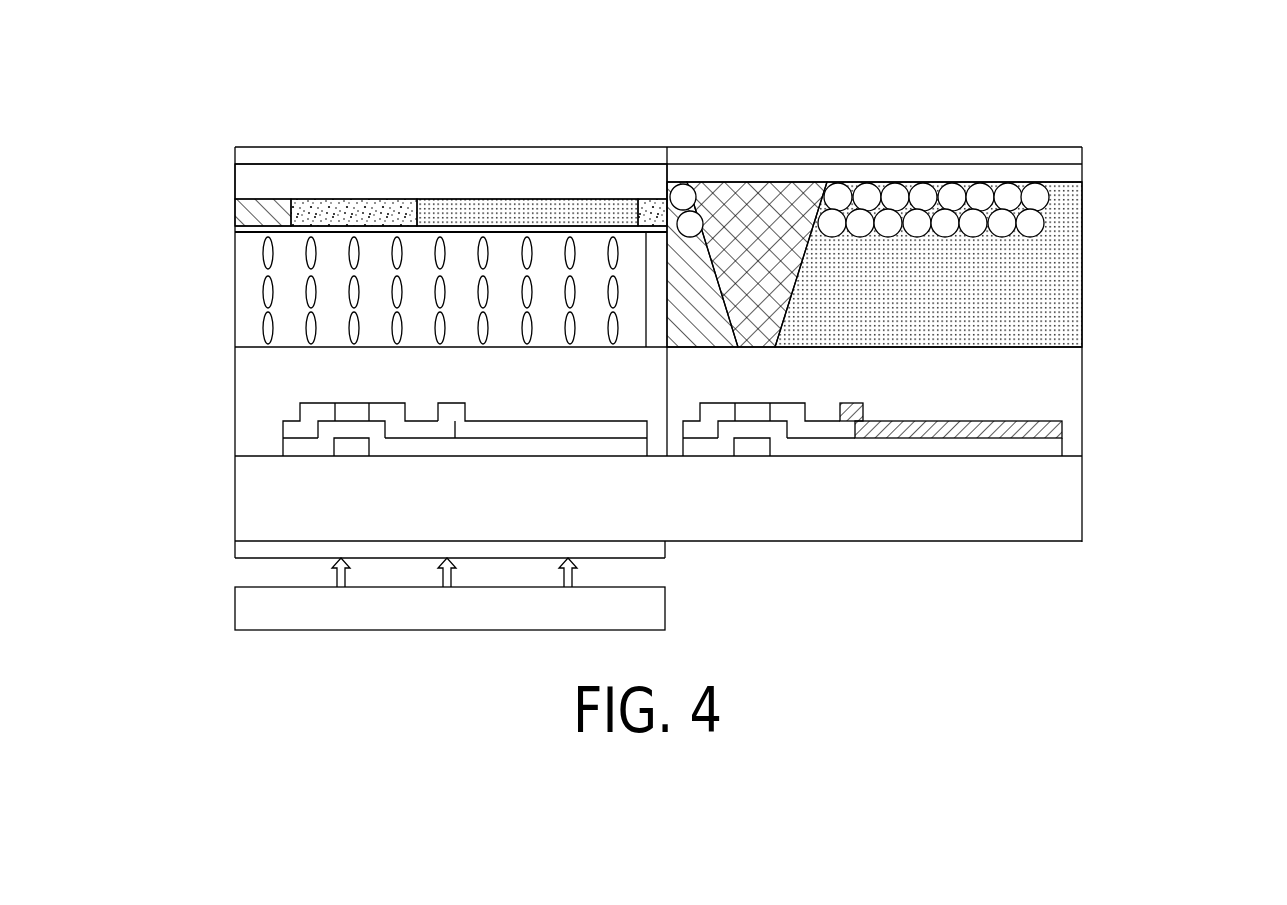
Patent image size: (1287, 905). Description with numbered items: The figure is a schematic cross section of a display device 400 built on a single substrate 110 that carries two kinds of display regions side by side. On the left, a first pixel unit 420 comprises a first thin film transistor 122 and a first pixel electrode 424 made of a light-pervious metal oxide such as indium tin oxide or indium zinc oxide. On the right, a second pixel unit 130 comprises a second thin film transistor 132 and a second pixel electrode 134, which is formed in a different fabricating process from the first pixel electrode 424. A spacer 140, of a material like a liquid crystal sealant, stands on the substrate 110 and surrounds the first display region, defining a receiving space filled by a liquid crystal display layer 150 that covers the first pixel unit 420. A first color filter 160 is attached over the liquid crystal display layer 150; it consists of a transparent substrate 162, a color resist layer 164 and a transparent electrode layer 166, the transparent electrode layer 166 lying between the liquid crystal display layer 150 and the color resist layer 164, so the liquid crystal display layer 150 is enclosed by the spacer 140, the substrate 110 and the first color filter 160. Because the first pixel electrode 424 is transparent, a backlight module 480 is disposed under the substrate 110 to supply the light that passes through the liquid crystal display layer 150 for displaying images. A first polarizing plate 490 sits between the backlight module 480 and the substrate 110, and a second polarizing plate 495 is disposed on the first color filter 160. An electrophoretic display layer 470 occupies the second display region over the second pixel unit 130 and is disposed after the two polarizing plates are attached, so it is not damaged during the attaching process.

The display device 400 is at (1286, 582).
The substrate 110 is at (1055, 505).
The first thin film transistor 122 is at (362, 386).
The first pixel electrode 424 is at (530, 423).
The first pixel unit 420 is at (465, 243).
The second pixel unit 130 is at (872, 243).
The second thin film transistor 132 is at (762, 386).
The second pixel electrode 134 is at (932, 421).
The spacer 140 is at (646, 232).
The liquid crystal display layer 150 is at (257, 320).
The first color filter 160 is at (362, 228).
The transparent substrate 162 is at (252, 183).
The color resist layer 164 is at (234, 216).
The transparent electrode layer 166 is at (398, 259).
The electrophoretic display layer 470 is at (1085, 148).
The backlight module 480 is at (255, 609).
The first polarizing plate 490 is at (255, 551).
The second polarizing plate 495 is at (247, 158).